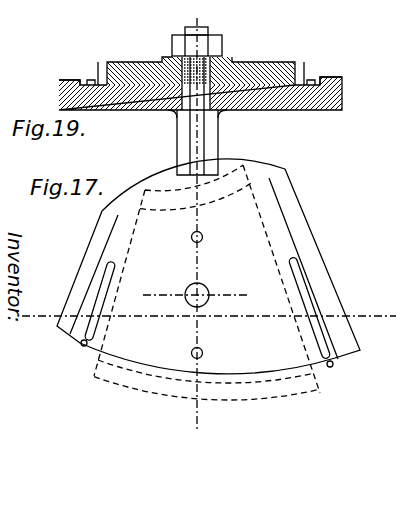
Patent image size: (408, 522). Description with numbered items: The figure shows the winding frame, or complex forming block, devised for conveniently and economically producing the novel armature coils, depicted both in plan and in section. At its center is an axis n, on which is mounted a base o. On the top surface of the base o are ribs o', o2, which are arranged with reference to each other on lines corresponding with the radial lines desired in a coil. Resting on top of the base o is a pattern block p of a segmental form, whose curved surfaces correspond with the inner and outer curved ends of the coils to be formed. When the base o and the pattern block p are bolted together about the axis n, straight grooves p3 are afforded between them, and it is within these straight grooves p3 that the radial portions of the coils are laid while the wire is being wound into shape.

In FIG. 19, the base o is at (200, 101).
In FIG. 17, the base o is at (209, 295).
In FIG. 19, the rib o' is at (196, 71).
In FIG. 17, the rib o' is at (216, 268).
In FIG. 19, the rib o2 is at (90, 80).
In FIG. 17, the rib o2 is at (82, 343).
In FIG. 19, the pattern block p is at (143, 62).
In FIG. 17, the pattern block p is at (207, 282).
In FIG. 19, the straight groove p3 is at (82, 80).
In FIG. 17, the straight groove p3 is at (92, 306).
In FIG. 19, the axis n is at (204, 97).